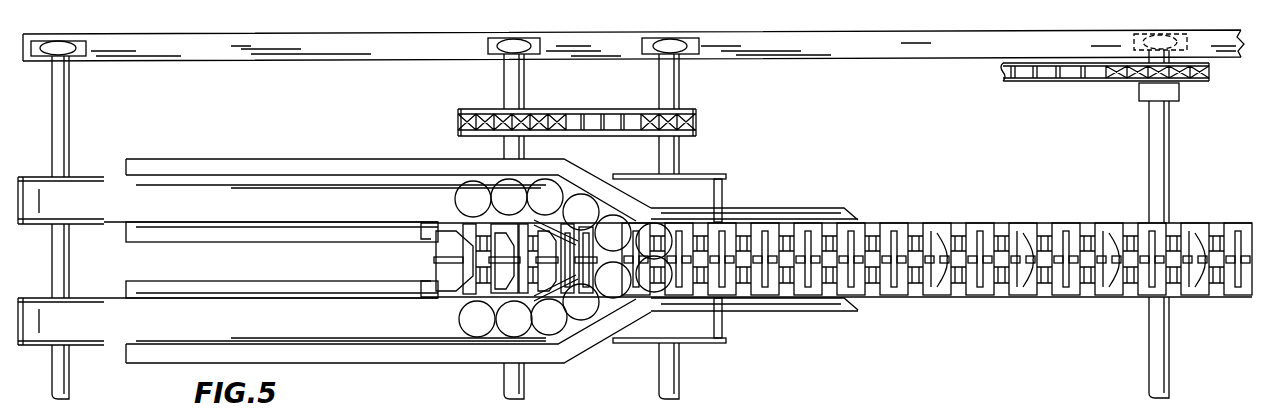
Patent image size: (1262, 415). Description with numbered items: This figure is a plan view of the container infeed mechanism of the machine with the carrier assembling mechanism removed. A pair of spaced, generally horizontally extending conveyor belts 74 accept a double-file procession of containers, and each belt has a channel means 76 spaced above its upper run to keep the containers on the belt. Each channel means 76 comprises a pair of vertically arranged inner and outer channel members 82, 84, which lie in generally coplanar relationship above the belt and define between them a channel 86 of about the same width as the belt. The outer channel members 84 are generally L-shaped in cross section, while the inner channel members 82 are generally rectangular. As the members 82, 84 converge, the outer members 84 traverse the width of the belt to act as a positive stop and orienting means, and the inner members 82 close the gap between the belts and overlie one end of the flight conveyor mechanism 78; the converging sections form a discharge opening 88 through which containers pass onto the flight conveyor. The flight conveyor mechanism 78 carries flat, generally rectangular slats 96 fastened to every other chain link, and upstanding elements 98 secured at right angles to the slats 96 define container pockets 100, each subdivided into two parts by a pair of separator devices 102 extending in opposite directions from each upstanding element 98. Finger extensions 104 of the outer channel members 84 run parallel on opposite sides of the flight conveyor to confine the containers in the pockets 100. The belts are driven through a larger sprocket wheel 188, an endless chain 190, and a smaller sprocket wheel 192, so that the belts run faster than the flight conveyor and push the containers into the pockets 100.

The conveyor belts 74 is at (118, 186).
The channel means 76 is at (594, 119).
The flight conveyor mechanism 78 is at (892, 298).
The inner channel members 82 is at (315, 226).
The outer channel members 84 is at (312, 168).
The channel 86 is at (220, 302).
The discharge opening 88 is at (600, 210).
The slats 96 is at (640, 220).
The upstanding elements 98 is at (640, 262).
The container pockets 100 is at (746, 232).
The separator devices 102 is at (642, 262).
The finger extensions 104 is at (800, 207).
The sprocket wheel 188 is at (480, 108).
The endless chain 190 is at (584, 121).
The sprocket wheel 192 is at (693, 108).